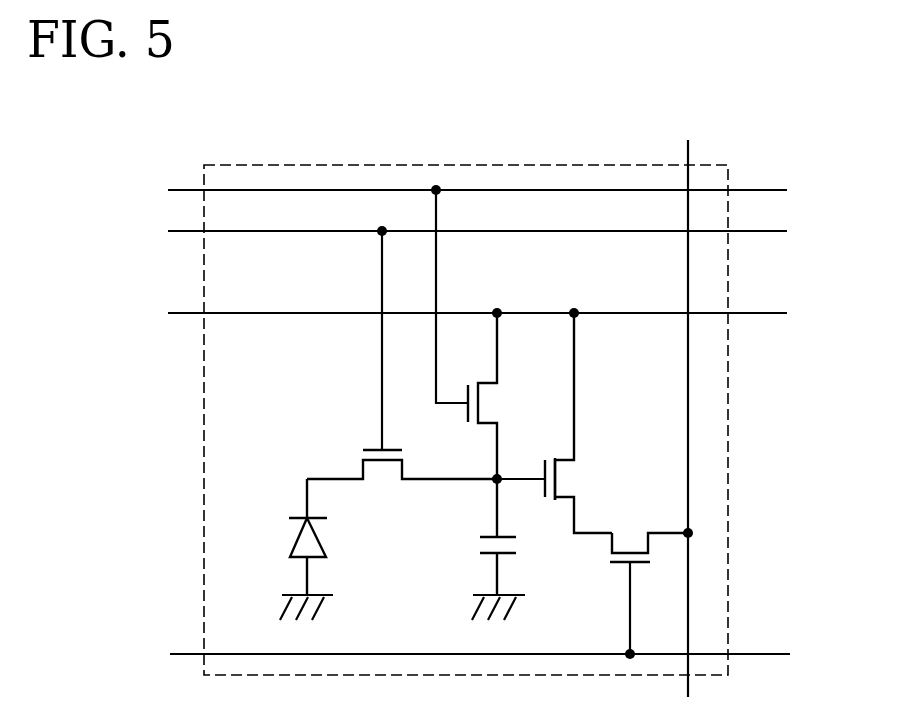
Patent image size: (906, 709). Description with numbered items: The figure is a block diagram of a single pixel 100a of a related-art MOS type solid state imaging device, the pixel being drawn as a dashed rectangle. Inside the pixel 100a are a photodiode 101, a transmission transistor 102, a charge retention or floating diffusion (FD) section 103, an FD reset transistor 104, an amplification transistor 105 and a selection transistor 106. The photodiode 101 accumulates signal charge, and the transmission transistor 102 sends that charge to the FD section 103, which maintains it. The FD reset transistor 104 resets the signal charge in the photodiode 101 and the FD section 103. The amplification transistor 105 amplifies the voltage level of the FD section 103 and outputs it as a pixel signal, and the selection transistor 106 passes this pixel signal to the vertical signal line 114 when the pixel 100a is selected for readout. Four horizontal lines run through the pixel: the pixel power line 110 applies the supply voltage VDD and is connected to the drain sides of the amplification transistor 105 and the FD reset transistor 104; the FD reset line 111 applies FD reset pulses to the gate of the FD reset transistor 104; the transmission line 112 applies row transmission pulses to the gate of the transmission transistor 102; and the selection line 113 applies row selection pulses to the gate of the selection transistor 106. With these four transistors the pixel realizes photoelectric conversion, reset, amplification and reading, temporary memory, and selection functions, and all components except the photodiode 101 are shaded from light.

The pixel 100a is at (395, 163).
The photodiode 101 is at (294, 546).
The transmission transistor 102 is at (362, 466).
The charge retention (FD) section 103 is at (487, 537).
The FD reset transistor 104 is at (482, 403).
The amplification transistor 105 is at (558, 480).
The selection transistor 106 is at (630, 549).
The pixel power line 110 is at (757, 311).
The FD reset line 111 is at (757, 188).
The transmission line 112 is at (757, 229).
The selection line 113 is at (760, 654).
The vertical signal line 114 is at (690, 153).